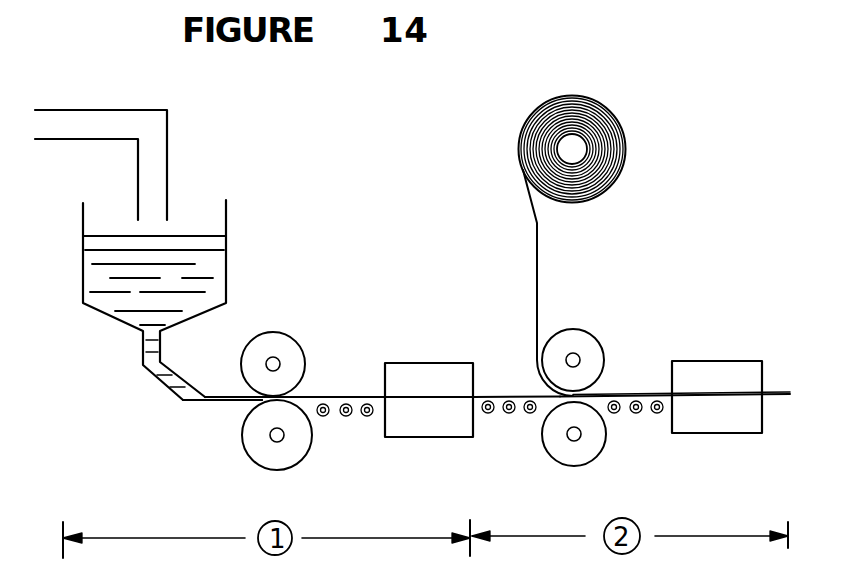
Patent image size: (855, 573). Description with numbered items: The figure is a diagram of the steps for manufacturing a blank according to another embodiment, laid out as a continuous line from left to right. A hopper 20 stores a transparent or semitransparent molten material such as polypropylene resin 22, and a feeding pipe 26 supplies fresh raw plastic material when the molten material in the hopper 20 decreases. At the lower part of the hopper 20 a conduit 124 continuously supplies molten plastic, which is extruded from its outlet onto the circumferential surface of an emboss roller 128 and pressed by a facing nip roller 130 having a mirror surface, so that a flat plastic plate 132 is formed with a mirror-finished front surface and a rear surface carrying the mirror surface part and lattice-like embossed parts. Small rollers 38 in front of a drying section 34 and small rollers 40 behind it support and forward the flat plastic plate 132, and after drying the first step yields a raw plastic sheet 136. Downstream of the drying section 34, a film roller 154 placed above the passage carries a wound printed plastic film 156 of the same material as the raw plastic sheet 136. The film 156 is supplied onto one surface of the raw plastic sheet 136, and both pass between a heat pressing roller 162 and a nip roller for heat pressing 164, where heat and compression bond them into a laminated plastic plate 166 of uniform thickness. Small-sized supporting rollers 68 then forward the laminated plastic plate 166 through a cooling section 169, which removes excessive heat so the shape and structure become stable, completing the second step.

The feeding pipe 26 is at (152, 150).
The hopper 20 is at (226, 213).
The polypropylene resin 22 is at (208, 258).
The conduit 124 is at (215, 403).
The nip roller 130 is at (268, 347).
The emboss roller 128 is at (255, 440).
The flat plastic plate 132 is at (308, 397).
The small rollers 38 is at (346, 420).
The drying section 34 is at (432, 425).
The raw plastic sheet 136 is at (497, 396).
The small rollers 40 is at (509, 415).
The film roller 154 is at (538, 135).
The printed plastic film 156 is at (534, 268).
The nip roller for heat pressing 164 is at (567, 338).
The heat pressing roller 162 is at (565, 448).
The laminated plastic plate 166 is at (640, 392).
The supporting rollers 68 is at (636, 415).
The cooling section 169 is at (712, 360).